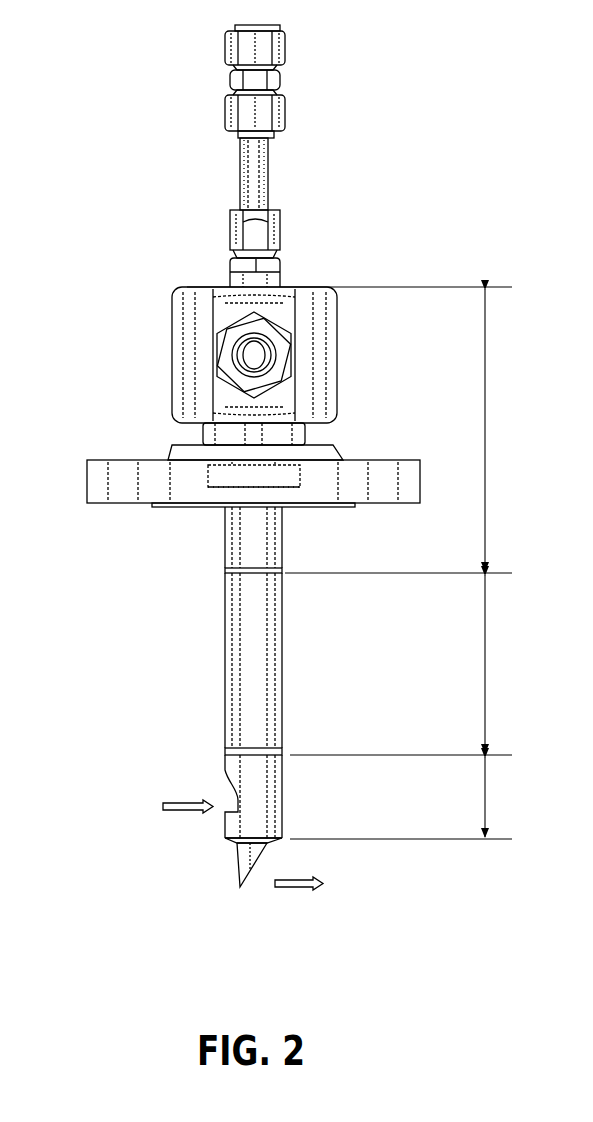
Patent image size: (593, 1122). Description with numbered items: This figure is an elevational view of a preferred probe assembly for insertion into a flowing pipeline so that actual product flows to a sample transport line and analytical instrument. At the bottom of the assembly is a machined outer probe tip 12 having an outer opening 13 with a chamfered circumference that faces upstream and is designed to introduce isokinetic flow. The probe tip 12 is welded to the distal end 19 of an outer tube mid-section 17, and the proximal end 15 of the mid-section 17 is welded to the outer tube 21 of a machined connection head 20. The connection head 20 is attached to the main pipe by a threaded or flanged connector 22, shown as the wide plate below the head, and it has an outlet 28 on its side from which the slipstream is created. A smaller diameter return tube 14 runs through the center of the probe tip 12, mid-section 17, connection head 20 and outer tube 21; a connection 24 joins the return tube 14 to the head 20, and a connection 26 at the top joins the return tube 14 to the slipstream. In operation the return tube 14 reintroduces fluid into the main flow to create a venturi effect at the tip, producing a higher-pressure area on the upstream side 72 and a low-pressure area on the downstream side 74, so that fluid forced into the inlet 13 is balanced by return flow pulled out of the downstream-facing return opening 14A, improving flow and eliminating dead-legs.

The outer probe tip 12 is at (283, 797).
The outer opening 13 is at (225, 812).
The return tube 14 is at (247, 170).
The return opening 14A is at (263, 860).
The proximal end 15 is at (285, 573).
The outer tube mid-section 17 is at (283, 652).
The distal end 19 is at (217, 746).
The machined connection head 20 is at (128, 374).
The outer tube 21 is at (282, 545).
The threaded or flanged connector 22 is at (195, 510).
The connection 24 is at (280, 235).
The connection 26 is at (232, 44).
The outlet 28 is at (290, 355).
The upstream side 72 is at (146, 802).
The downstream side 74 is at (326, 893).